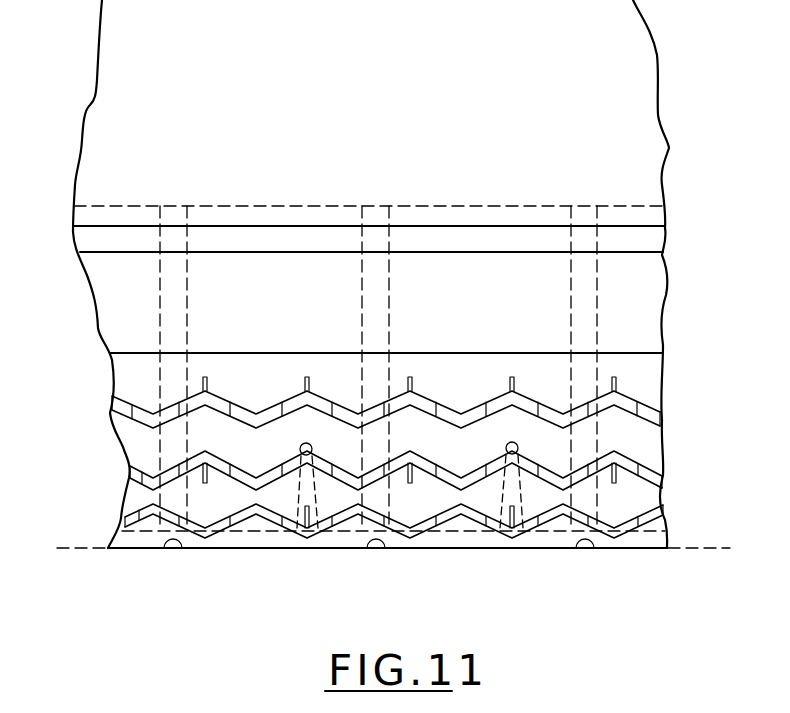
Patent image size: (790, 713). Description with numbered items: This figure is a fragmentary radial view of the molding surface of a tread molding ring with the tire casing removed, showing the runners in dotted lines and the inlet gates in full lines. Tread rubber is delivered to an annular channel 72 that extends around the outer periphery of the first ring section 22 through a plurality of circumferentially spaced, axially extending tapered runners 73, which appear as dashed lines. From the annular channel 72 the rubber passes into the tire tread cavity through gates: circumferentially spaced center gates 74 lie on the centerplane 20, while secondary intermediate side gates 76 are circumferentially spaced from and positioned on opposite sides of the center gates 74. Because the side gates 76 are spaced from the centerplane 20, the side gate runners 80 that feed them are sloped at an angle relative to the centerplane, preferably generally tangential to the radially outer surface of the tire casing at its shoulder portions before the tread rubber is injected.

The first ring section 22 is at (655, 277).
The tapered runners 73 is at (164, 316).
The side gates 76 is at (300, 450).
The side gate runners 80 is at (283, 530).
The annular channel 72 is at (672, 540).
The center gates 74 is at (173, 549).
The centerplane 20 is at (71, 548).